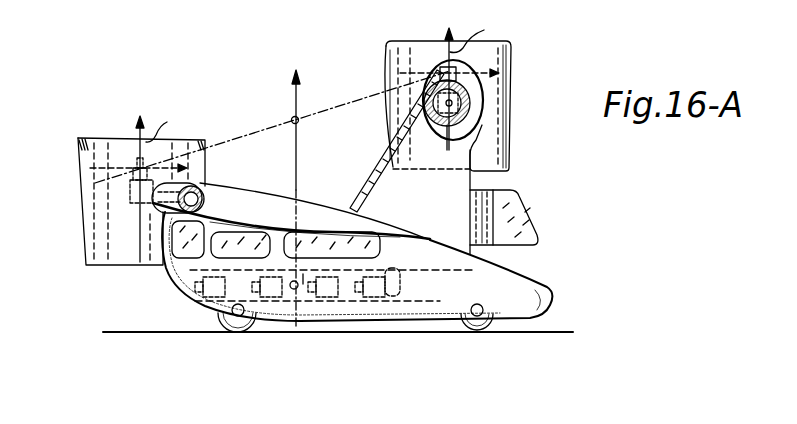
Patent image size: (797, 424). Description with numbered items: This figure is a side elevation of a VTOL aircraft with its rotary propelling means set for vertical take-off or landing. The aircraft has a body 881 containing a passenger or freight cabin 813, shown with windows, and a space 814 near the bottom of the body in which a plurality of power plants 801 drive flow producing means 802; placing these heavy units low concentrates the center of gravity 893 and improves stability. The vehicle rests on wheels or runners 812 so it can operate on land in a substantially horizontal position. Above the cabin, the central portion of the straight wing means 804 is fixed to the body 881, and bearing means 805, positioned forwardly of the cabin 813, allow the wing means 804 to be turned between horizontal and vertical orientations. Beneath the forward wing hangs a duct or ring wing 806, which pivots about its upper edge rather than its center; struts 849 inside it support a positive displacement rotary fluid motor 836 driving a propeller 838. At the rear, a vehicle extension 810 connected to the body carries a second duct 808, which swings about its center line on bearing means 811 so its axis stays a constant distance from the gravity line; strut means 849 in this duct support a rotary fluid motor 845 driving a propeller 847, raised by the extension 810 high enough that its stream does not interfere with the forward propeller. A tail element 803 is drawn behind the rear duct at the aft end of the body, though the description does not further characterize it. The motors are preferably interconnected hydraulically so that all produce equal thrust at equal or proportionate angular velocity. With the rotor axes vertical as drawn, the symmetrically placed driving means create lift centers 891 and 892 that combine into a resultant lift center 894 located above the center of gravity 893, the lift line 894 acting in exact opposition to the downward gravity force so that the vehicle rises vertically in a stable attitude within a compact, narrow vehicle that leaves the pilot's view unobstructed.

The power plant 801 is at (200, 303).
The flow producing means 802 is at (514, 193).
The tail fin 803 is at (523, 219).
The wing means 804 is at (218, 196).
The bearing means 805 is at (204, 184).
The wing means (duct) 806 is at (78, 160).
The wing means (duct) 808 is at (386, 58).
The vehicle extension 810 is at (381, 160).
The bearing means 811 is at (438, 130).
The wheels or runners 812 is at (227, 323).
The passenger or freight cabin 813 is at (240, 236).
The space 814 is at (393, 267).
The positive displacement rotary fluid motor 836 is at (130, 193).
The propeller 838 is at (128, 166).
The positive displacement rotary fluid motor 845 is at (474, 96).
The propeller 847 is at (431, 67).
The strut 849 is at (150, 199).
The body 881 is at (174, 270).
The lift center 891 is at (171, 124).
The lift center 892 is at (482, 32).
The center of gravity 893 is at (303, 275).
The lift center 894 is at (293, 100).